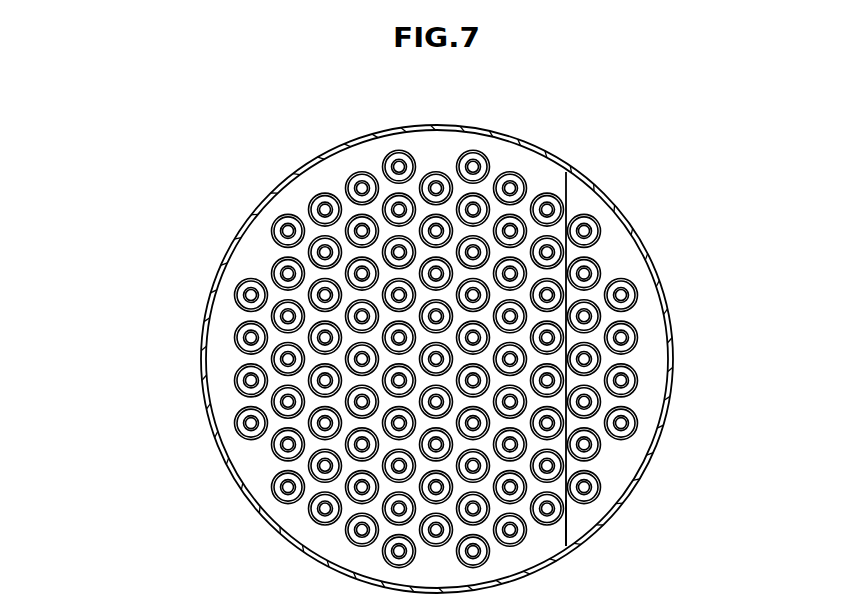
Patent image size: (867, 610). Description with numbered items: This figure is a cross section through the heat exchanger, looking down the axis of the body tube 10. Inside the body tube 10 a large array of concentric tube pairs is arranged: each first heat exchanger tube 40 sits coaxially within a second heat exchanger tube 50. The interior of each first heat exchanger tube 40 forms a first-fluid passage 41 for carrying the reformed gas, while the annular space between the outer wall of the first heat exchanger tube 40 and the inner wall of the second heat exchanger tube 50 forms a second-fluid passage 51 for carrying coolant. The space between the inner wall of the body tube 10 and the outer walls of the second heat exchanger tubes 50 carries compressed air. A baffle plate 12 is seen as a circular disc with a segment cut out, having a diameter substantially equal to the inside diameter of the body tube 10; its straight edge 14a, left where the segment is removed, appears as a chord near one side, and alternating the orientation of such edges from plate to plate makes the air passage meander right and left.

The body tube 10 is at (540, 152).
The baffle plate 12 is at (545, 533).
The straight edge 14a is at (567, 514).
The first heat exchanger tube 40 is at (244, 434).
The first-fluid passage 41 is at (585, 231).
The second heat exchanger tube 50 is at (237, 421).
The second-fluid passage 51 is at (594, 236).